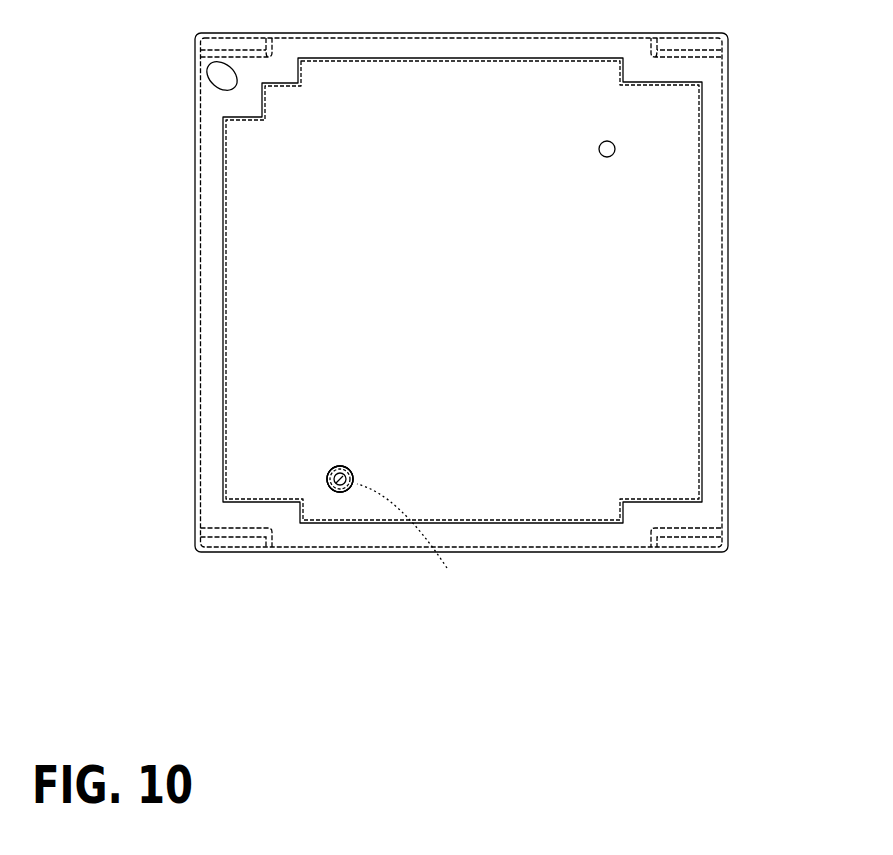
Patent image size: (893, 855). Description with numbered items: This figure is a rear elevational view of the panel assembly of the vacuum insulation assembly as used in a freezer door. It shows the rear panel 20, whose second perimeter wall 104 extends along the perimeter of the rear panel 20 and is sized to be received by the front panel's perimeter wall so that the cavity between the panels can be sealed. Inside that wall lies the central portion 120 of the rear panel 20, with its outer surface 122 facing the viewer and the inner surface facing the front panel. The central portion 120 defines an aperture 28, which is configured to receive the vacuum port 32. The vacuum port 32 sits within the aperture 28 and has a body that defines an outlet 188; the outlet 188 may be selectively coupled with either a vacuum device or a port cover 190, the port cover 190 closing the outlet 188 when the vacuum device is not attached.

The rear panel 20 is at (593, 358).
The aperture 28 is at (333, 467).
The vacuum port 32 is at (334, 492).
The second perimeter wall 104 is at (728, 207).
The central portion 120 is at (277, 283).
The outer surface 122 is at (350, 184).
The outlet 188 is at (411, 544).
The port cover 190 is at (346, 492).